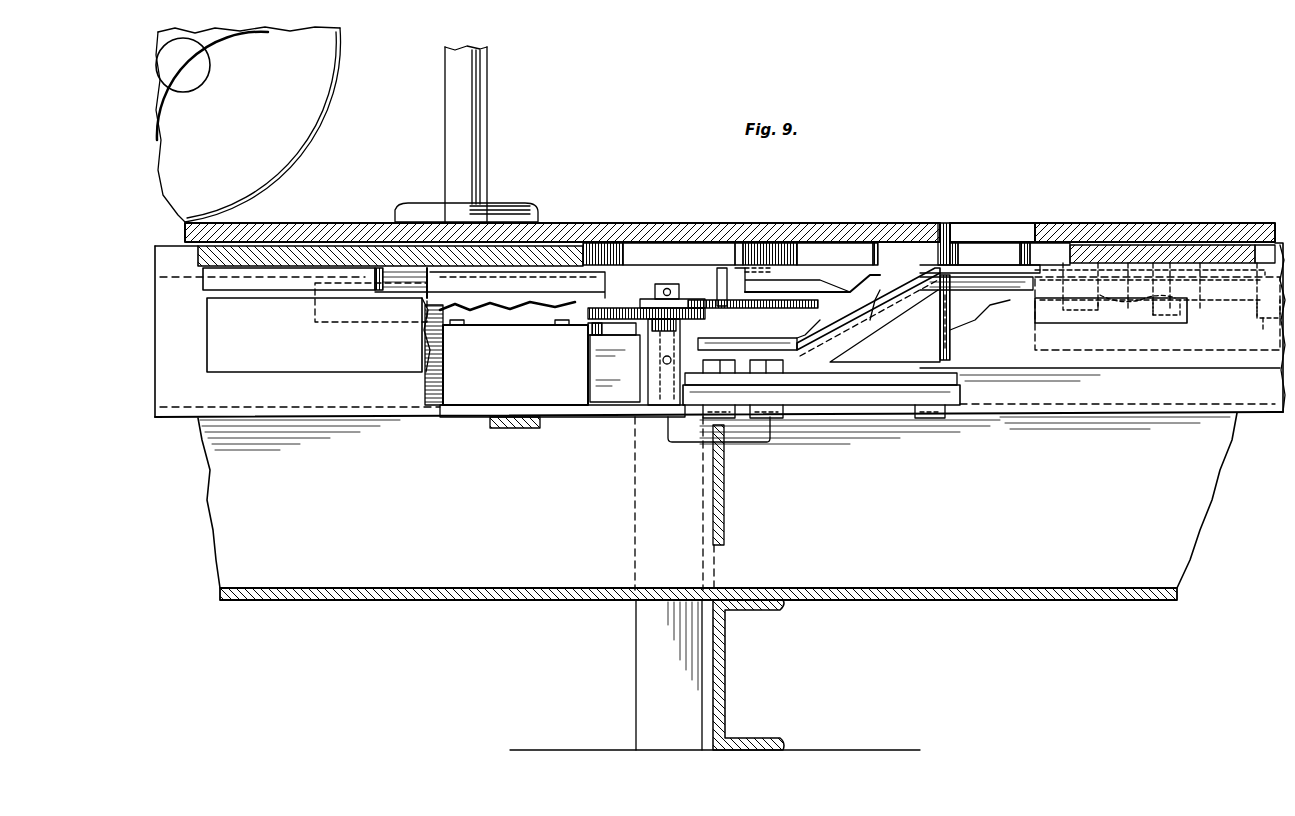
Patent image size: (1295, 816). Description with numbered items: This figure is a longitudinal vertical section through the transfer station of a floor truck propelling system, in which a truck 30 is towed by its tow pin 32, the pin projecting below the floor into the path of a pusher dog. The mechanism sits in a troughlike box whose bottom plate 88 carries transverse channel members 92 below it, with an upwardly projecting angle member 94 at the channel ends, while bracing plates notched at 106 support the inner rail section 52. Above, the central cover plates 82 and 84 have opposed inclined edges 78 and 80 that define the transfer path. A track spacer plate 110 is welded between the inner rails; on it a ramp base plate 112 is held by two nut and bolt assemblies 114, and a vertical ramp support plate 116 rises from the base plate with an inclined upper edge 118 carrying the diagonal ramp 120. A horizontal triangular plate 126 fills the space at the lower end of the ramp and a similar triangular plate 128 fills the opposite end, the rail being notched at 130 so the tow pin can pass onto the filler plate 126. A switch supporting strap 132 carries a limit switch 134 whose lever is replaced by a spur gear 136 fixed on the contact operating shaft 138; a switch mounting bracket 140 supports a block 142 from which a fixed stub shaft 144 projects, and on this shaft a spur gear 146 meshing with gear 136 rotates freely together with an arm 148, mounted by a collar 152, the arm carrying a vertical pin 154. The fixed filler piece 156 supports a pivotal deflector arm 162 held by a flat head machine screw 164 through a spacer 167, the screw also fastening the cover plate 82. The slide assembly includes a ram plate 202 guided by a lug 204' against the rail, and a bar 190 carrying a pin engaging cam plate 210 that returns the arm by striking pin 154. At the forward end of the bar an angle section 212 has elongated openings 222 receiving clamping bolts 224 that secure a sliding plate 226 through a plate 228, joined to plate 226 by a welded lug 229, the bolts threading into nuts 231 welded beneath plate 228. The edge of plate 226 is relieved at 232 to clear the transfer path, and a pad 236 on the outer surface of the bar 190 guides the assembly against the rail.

The truck 30 is at (306, 124).
The tow pin 32 is at (488, 133).
The rail section 52 is at (838, 318).
The inclined edge 78 is at (942, 224).
The inclined edge 80 is at (1030, 225).
The central cover plate 82 is at (640, 225).
The central cover plate 84 is at (1148, 225).
The bottom plate 88 is at (921, 600).
The channel member 92 is at (728, 686).
The angle member 94 is at (645, 650).
The notch 106 is at (690, 443).
The track spacer plate 110 is at (861, 398).
The ramp base plate 112 is at (843, 378).
The nut and bolt assembly 114 is at (777, 422).
The vertical ramp support plate 116 is at (922, 337).
The inclined upper edge 118 is at (874, 320).
The ramp 120 is at (898, 300).
The horizontal triangular plate 126 is at (745, 342).
The horizontal triangular plate 128 is at (986, 274).
The notch 130 is at (783, 340).
The switch supporting strap 132 is at (523, 430).
The limit switch 134 is at (513, 376).
The spur gear 136 is at (590, 330).
The contact operating shaft 138 is at (633, 335).
The switch mounting bracket 140 is at (612, 413).
The block 142 is at (663, 398).
The stub shaft 144 is at (660, 345).
The spur gear 146 is at (702, 318).
The arm 148 is at (752, 306).
The collar 152 is at (650, 290).
The pin 154 is at (717, 290).
The filler piece 156 is at (808, 270).
The deflector arm 162 is at (662, 250).
The flat head machine screw 164 is at (757, 240).
The spacer 167 is at (790, 250).
The bar 190 is at (316, 358).
The ram plate 202 is at (556, 246).
The lug 204' is at (315, 299).
The pin engaging cam plate 210 is at (445, 285).
The angle section 212 is at (1123, 338).
The elongated opening 222 is at (1108, 244).
The clamping bolt 224 is at (1205, 290).
The sliding plate 226 is at (1233, 245).
The plate 228 is at (1022, 292).
The lug 229 is at (1266, 310).
The nut 231 is at (1137, 309).
The relieved portion 232 is at (1043, 252).
The pad 236 is at (1062, 316).